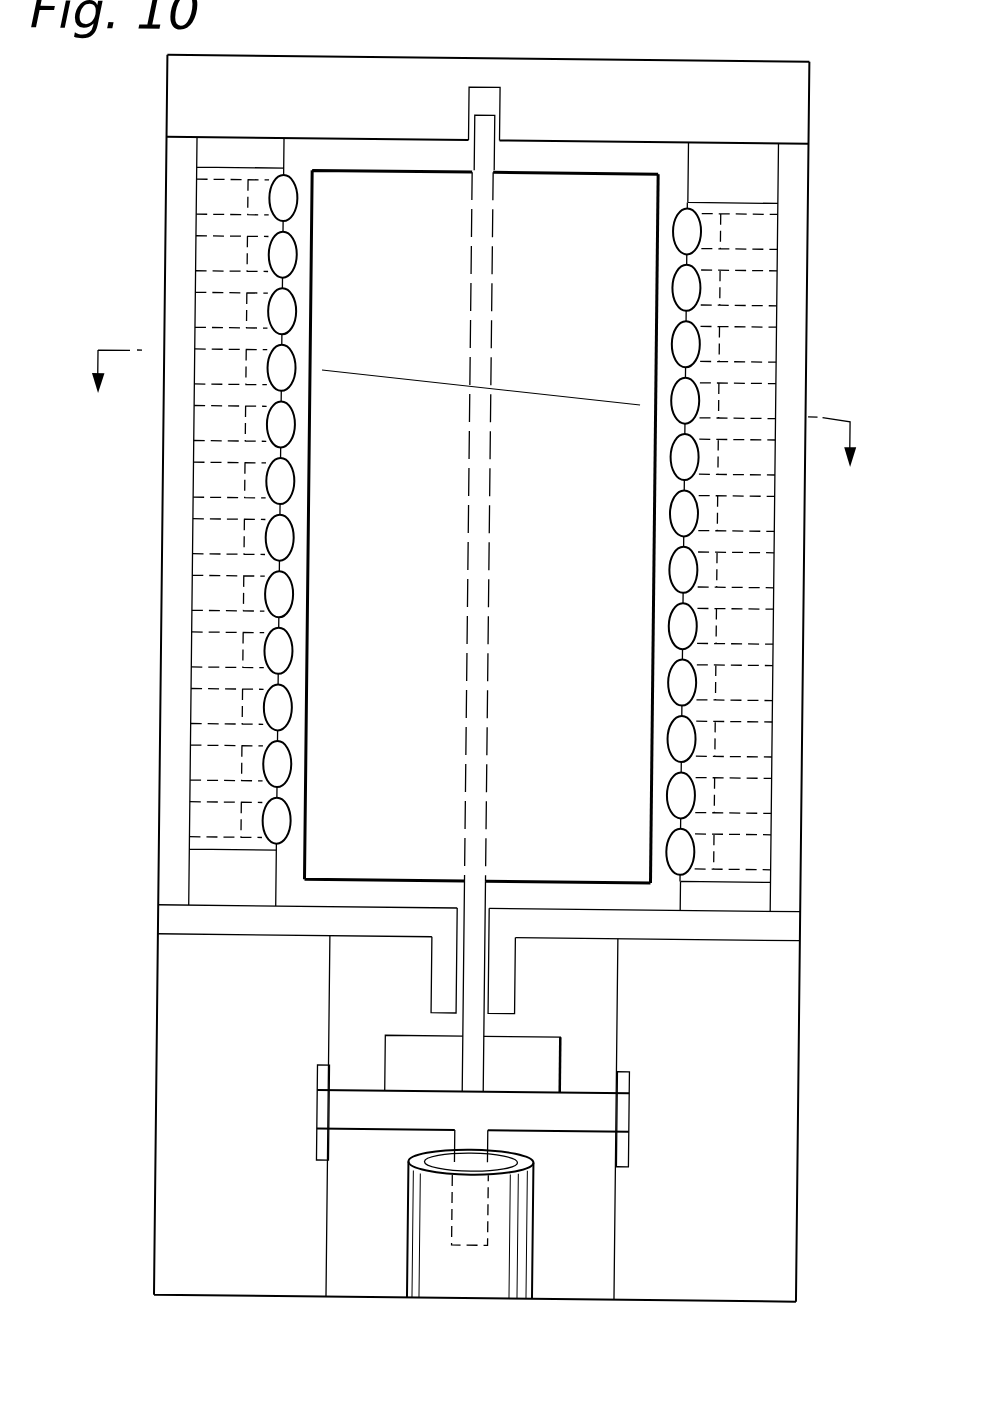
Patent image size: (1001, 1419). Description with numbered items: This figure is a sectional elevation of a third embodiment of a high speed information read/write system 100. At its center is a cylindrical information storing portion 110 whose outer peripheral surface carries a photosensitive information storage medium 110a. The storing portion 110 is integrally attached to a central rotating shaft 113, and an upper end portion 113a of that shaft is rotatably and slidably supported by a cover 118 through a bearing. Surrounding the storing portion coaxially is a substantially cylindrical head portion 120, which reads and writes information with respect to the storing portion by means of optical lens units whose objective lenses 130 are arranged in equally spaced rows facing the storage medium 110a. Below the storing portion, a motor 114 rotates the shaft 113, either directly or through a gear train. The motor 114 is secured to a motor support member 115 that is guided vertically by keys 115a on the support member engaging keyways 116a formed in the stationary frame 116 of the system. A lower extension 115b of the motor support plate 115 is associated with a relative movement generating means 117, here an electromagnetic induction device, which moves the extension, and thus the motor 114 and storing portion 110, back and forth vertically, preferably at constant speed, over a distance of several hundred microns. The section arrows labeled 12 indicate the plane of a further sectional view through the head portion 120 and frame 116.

The high speed information read/write system 100 is at (157, 185).
The cylindrical information storing portion 110 is at (372, 180).
The photosensitive information storage medium 110a is at (667, 175).
The central rotating shaft 113 is at (490, 148).
The upper end portion 113a is at (487, 117).
The motor 114 is at (542, 1049).
The motor support member 115 is at (595, 1099).
The keys 115a is at (335, 1110).
The lower extension 115b is at (487, 1135).
The fixed frame 116 is at (181, 973).
The keyways 116a is at (635, 1080).
The relative movement generating means 117 is at (526, 1226).
The cover 118 is at (734, 72).
The head portion 120 is at (178, 758).
The objective lenses 130 is at (288, 710).
The section line 12 is at (472, 426).